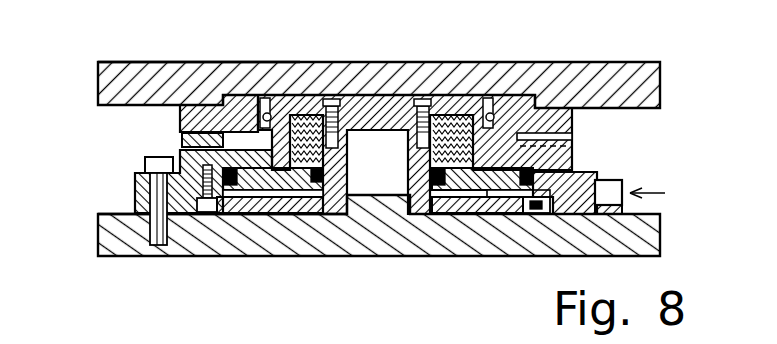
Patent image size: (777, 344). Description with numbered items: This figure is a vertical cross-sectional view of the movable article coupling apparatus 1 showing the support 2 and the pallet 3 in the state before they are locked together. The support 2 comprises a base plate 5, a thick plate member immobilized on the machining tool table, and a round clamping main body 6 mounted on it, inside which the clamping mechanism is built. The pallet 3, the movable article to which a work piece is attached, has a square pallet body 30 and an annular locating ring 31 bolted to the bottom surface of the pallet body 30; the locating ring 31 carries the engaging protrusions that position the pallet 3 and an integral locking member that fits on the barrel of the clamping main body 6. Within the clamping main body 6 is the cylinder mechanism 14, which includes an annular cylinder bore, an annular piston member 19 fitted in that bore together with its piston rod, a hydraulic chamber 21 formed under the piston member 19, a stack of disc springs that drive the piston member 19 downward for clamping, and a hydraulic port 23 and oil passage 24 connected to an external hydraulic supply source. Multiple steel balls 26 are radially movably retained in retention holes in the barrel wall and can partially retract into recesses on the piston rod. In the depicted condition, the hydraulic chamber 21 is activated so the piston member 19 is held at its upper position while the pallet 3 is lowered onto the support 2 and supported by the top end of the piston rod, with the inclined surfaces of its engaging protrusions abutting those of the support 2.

The movable article coupling apparatus 1 is at (118, 148).
The support 2 is at (238, 257).
The pallet 3 is at (631, 63).
The base plate 5 is at (98, 232).
The clamping main body 6 is at (135, 190).
The cylinder mechanism 14 is at (300, 215).
The piston member 19 is at (512, 186).
The hydraulic chamber 21 is at (478, 215).
The hydraulic port 23 is at (620, 182).
The oil passage 24 is at (588, 182).
The steel balls 26 is at (481, 97).
The pallet body 30 is at (98, 80).
The locating ring 31 is at (180, 121).